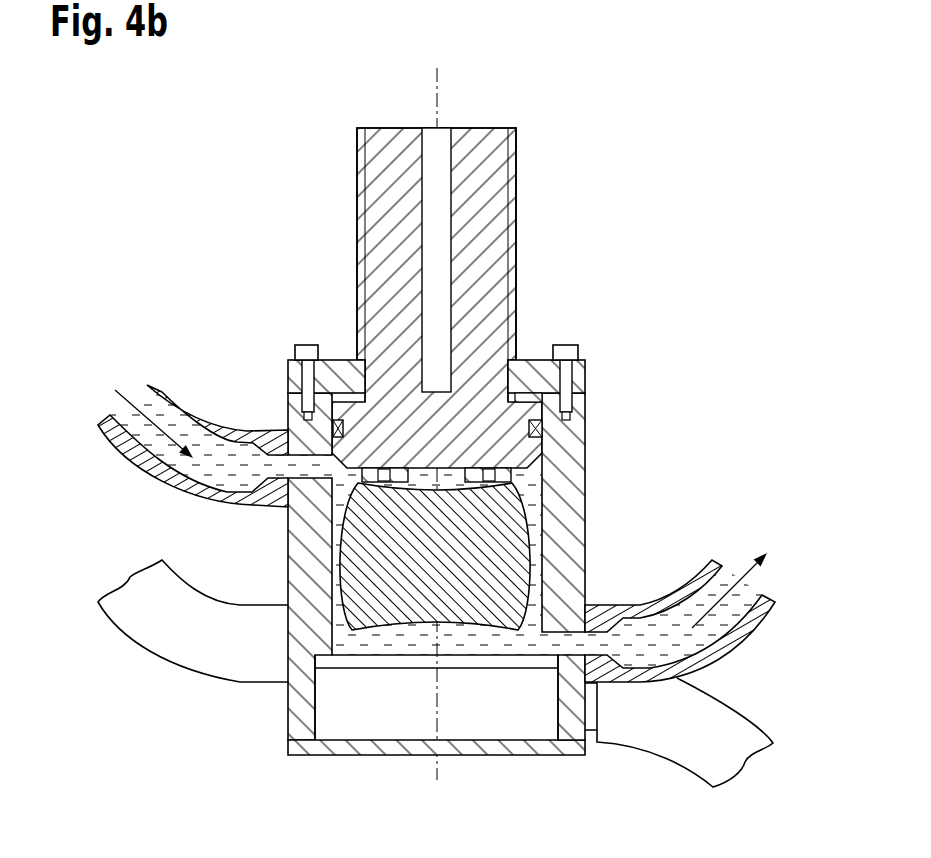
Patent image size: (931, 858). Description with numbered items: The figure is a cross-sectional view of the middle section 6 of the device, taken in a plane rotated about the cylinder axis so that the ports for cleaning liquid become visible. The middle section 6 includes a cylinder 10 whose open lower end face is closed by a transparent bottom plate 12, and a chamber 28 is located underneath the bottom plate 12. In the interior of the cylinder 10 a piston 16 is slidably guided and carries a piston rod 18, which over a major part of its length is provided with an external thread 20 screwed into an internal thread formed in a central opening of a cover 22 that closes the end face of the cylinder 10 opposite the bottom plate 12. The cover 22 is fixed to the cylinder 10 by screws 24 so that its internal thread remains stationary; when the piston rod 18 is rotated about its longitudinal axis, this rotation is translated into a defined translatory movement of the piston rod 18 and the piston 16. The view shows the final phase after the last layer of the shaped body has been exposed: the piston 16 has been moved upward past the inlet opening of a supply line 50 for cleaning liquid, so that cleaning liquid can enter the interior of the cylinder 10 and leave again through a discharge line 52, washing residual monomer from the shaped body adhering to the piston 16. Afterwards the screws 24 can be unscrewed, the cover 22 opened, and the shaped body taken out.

The middle section 6 is at (715, 395).
The cylinder 10 is at (288, 528).
The bottom plate 12 is at (335, 670).
The piston 16 is at (528, 398).
The piston rod 18 is at (480, 127).
The external thread 20 is at (516, 317).
The cover 22 is at (288, 385).
The screws 24 is at (293, 353).
The chamber 28 is at (533, 727).
The supply line 50 is at (142, 465).
The discharge line 52 is at (757, 620).